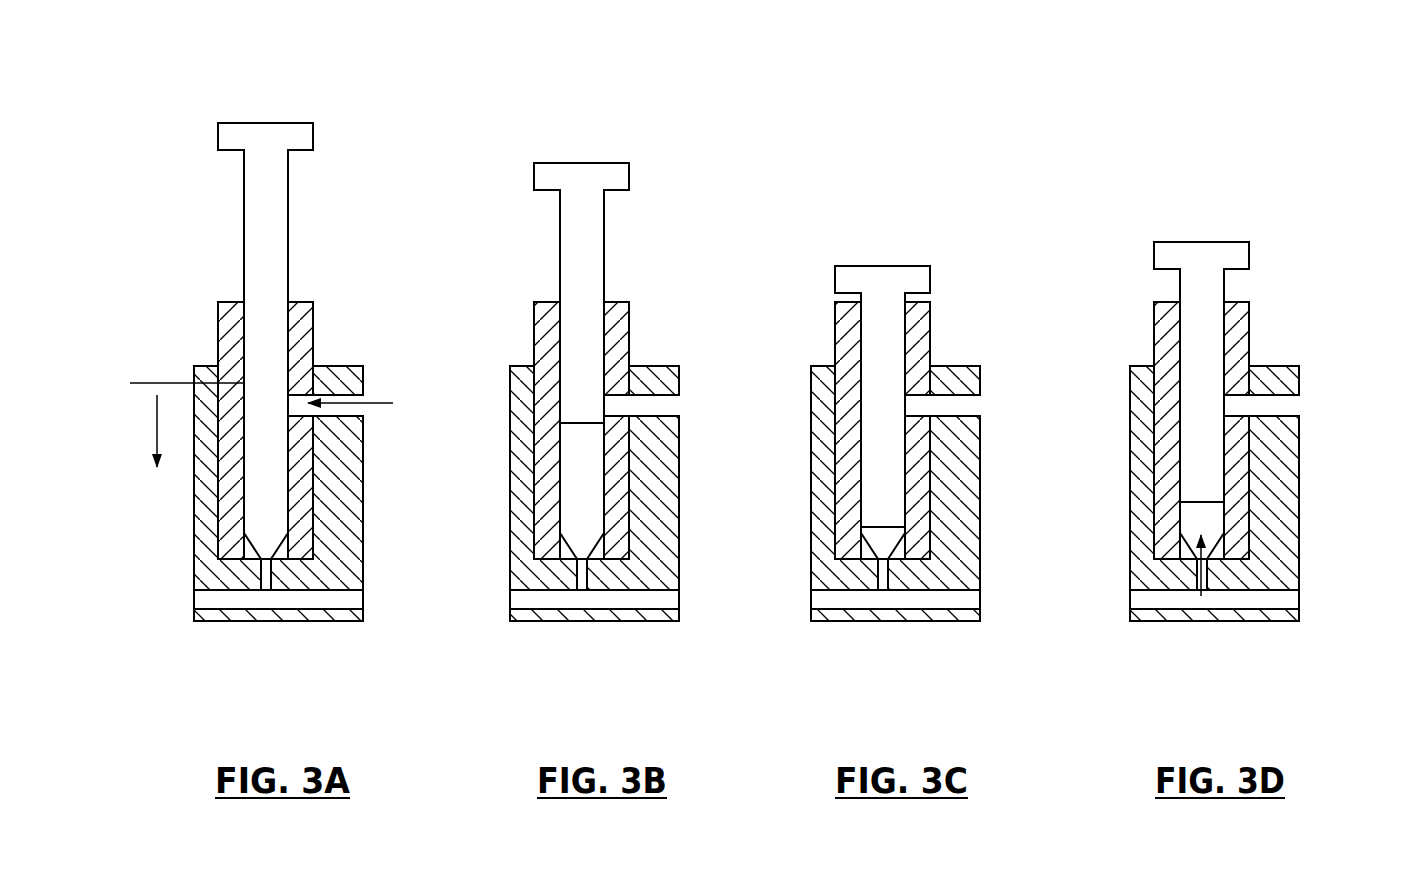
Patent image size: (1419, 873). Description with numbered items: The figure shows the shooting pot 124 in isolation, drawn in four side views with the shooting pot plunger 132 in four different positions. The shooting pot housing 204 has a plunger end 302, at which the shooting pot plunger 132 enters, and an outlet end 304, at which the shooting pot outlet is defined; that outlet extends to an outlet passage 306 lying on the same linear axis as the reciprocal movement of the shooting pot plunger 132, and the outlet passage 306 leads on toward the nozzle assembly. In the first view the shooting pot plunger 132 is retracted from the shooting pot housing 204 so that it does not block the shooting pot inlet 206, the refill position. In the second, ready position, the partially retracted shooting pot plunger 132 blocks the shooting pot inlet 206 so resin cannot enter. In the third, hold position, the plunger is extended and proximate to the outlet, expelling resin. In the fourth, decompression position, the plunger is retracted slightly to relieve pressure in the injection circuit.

In FIG. 3A, the shooting pot 124 is at (120, 162).
In FIG. 3B, the shooting pot 124 is at (660, 217).
In FIG. 3C, the shooting pot 124 is at (849, 223).
In FIG. 3D, the shooting pot 124 is at (1276, 328).
In FIG. 3A, the shooting pot plunger 132 is at (270, 186).
In FIG. 3B, the shooting pot plunger 132 is at (462, 88).
In FIG. 3C, the shooting pot plunger 132 is at (888, 277).
In FIG. 3D, the shooting pot plunger 132 is at (1206, 291).
In FIG. 3A, the plunger end 302 is at (318, 322).
In FIG. 3B, the plunger end 302 is at (527, 322).
In FIG. 3C, the plunger end 302 is at (933, 322).
In FIG. 3D, the plunger end 302 is at (1141, 322).
In FIG. 3A, the shooting pot housing 204 is at (300, 463).
In FIG. 3A, the shooting pot inlet 206 is at (343, 413).
In FIG. 3B, the shooting pot inlet 206 is at (650, 403).
In FIG. 3C, the shooting pot inlet 206 is at (955, 405).
In FIG. 3D, the shooting pot inlet 206 is at (1276, 408).
In FIG. 3A, the outlet end 304 is at (323, 558).
In FIG. 3B, the outlet end 304 is at (527, 558).
In FIG. 3C, the outlet end 304 is at (937, 558).
In FIG. 3D, the outlet end 304 is at (1148, 558).
In FIG. 3A, the outlet passage 306 is at (263, 574).
In FIG. 3B, the outlet passage 306 is at (590, 578).
In FIG. 3C, the outlet passage 306 is at (880, 575).
In FIG. 3D, the outlet passage 306 is at (1210, 575).